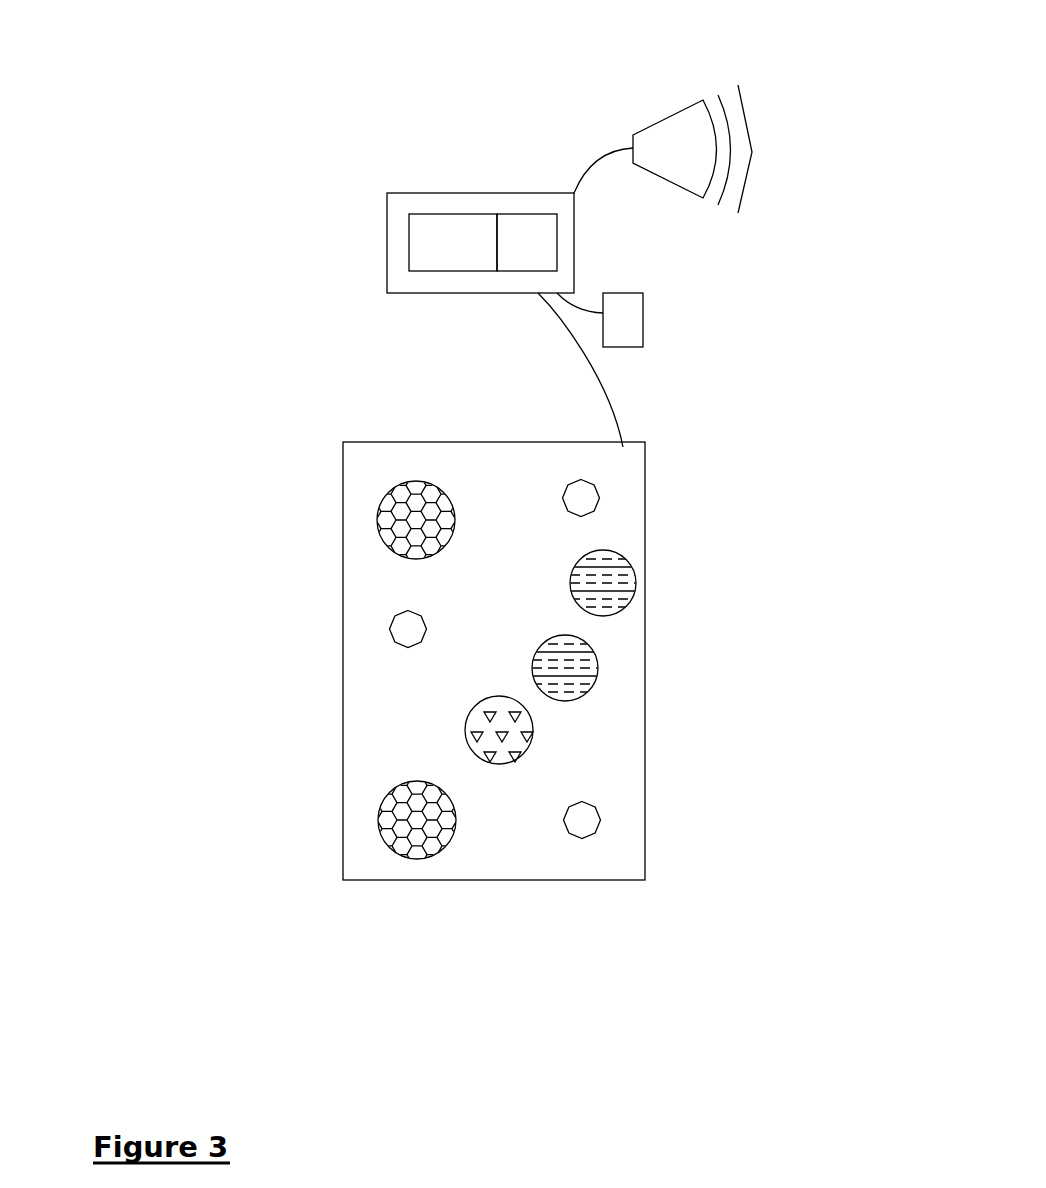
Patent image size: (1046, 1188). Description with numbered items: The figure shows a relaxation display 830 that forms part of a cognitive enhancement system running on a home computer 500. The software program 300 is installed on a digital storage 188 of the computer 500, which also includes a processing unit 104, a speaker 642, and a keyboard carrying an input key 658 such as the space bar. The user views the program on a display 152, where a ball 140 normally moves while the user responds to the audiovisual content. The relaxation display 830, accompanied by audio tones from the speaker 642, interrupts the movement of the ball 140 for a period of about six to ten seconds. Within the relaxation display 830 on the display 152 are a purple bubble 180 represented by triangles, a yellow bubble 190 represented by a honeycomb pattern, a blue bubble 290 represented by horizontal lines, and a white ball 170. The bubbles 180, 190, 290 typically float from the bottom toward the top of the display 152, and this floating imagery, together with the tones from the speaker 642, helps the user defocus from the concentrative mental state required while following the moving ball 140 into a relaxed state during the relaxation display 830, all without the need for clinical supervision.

The processing unit 104 is at (450, 285).
The digital storage 188 is at (422, 247).
The software program 300 is at (525, 222).
The speaker 642 is at (663, 147).
The computer 500 is at (780, 215).
The input key 658 is at (618, 303).
The display 152 is at (627, 770).
The ball 140 is at (617, 548).
The yellow bubble 190 is at (375, 813).
The white ball 170 is at (563, 510).
The blue bubble 290 is at (602, 667).
The purple bubble 180 is at (497, 767).
The relaxation display 830 is at (736, 609).